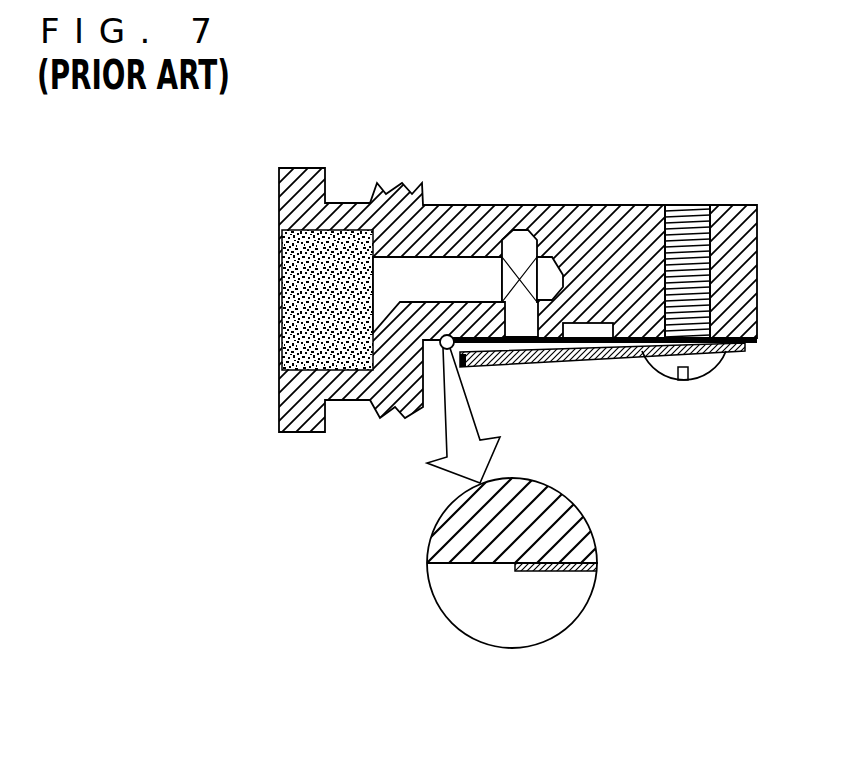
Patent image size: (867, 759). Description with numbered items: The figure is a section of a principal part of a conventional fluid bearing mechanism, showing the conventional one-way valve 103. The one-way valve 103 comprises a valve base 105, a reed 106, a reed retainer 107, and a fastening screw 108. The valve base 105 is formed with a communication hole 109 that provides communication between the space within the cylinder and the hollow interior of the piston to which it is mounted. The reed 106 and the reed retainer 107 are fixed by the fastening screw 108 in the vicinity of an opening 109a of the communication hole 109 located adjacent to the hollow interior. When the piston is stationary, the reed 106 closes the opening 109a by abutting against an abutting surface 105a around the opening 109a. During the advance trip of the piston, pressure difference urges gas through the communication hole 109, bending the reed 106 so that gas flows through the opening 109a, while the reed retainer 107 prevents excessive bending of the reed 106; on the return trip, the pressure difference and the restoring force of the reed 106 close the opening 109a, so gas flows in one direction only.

The one-way valve 103 is at (485, 378).
The valve base 105 is at (277, 200).
The abutting surface 105a is at (440, 352).
The reed 106 is at (465, 365).
The reed retainer 107 is at (552, 363).
The fastening screw 108 is at (697, 363).
The communication hole 109 is at (435, 267).
The opening 109a is at (513, 307).